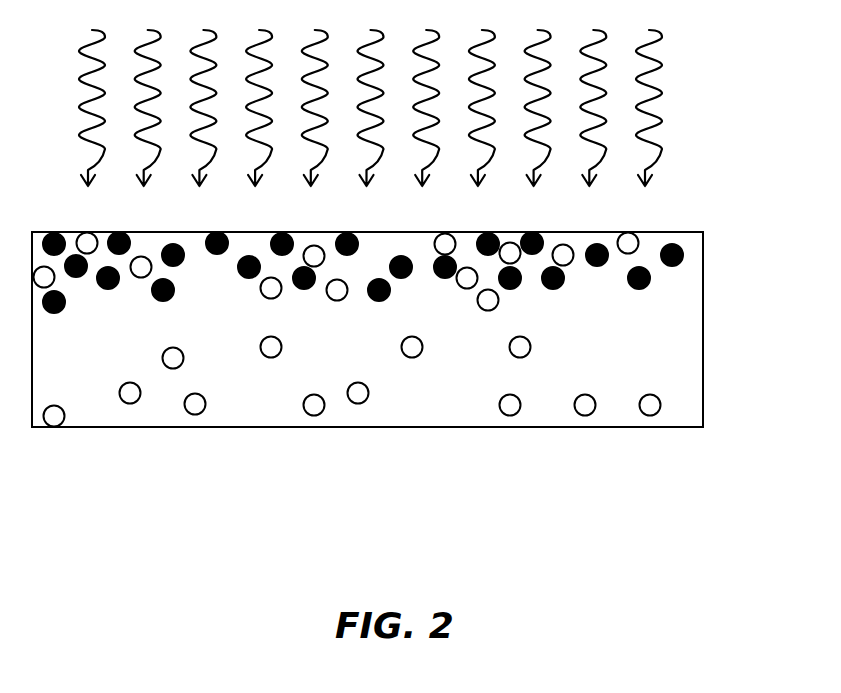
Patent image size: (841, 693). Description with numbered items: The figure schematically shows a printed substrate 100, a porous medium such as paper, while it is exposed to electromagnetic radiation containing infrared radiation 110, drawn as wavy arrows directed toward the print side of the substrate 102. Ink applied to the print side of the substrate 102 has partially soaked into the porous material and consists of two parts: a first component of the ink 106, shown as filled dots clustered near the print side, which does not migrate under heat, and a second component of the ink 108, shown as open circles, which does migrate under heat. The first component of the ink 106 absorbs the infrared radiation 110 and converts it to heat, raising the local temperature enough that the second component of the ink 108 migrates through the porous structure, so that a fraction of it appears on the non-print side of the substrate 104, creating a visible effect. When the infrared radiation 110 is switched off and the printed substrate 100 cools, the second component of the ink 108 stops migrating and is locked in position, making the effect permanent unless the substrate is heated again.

The printed substrate 100 is at (127, 348).
The print side of the substrate 102 is at (692, 236).
The non-print side of the substrate 104 is at (618, 428).
The first component of the ink 106 is at (401, 278).
The second component of the ink 108 is at (337, 301).
The infrared radiation 110 is at (663, 65).